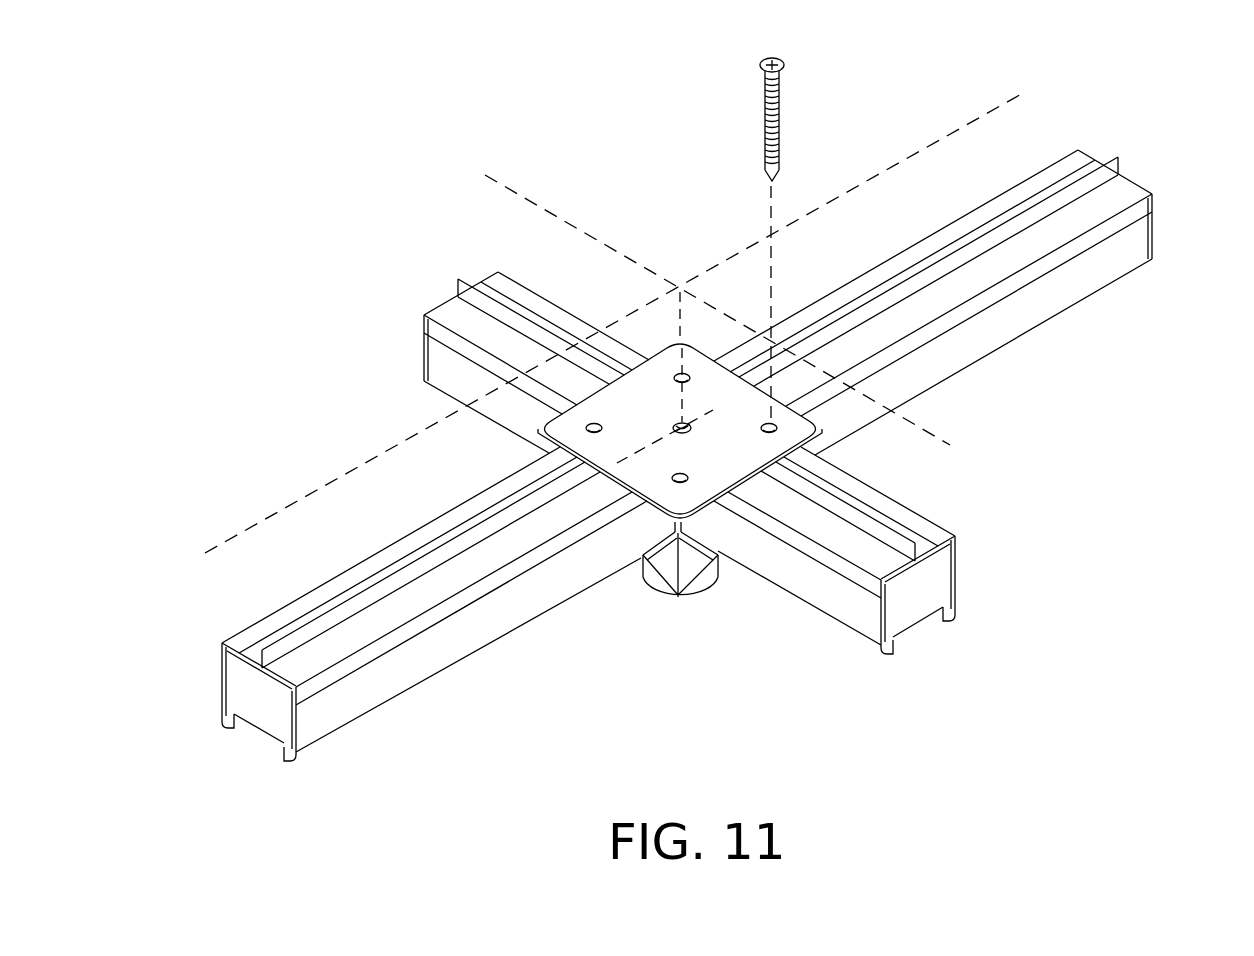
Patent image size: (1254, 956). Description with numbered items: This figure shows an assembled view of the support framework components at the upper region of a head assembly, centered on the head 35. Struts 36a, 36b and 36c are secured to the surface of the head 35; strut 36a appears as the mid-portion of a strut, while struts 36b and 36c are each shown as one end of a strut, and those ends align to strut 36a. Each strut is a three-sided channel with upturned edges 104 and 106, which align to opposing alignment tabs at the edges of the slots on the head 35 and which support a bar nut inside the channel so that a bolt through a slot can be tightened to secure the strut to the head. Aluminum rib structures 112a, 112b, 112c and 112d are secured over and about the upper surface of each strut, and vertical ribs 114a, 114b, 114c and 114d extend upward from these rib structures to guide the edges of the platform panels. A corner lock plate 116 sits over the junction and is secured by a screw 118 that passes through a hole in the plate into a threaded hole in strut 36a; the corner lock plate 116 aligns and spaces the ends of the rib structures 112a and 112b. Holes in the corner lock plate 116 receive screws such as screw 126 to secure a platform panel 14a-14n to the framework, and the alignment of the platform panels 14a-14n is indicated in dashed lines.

The platform panels 14a-14n is at (518, 186).
The screw 126 is at (779, 112).
The corner lock plate 116 is at (732, 469).
The screw 118 is at (672, 421).
The head 35 is at (688, 620).
The strut 36a is at (868, 562).
The strut 36b is at (969, 302).
The strut 36c is at (434, 604).
The rib structure 112a is at (922, 520).
The rib structure 112b is at (1112, 190).
The rib structure 112c is at (538, 302).
The rib structure 112d is at (350, 570).
The vertical rib 114a is at (870, 492).
The vertical rib 114b is at (963, 243).
The vertical rib 114c is at (480, 283).
The vertical rib 114d is at (443, 545).
The upturned edge 104 is at (896, 648).
The upturned edge 106 is at (940, 612).